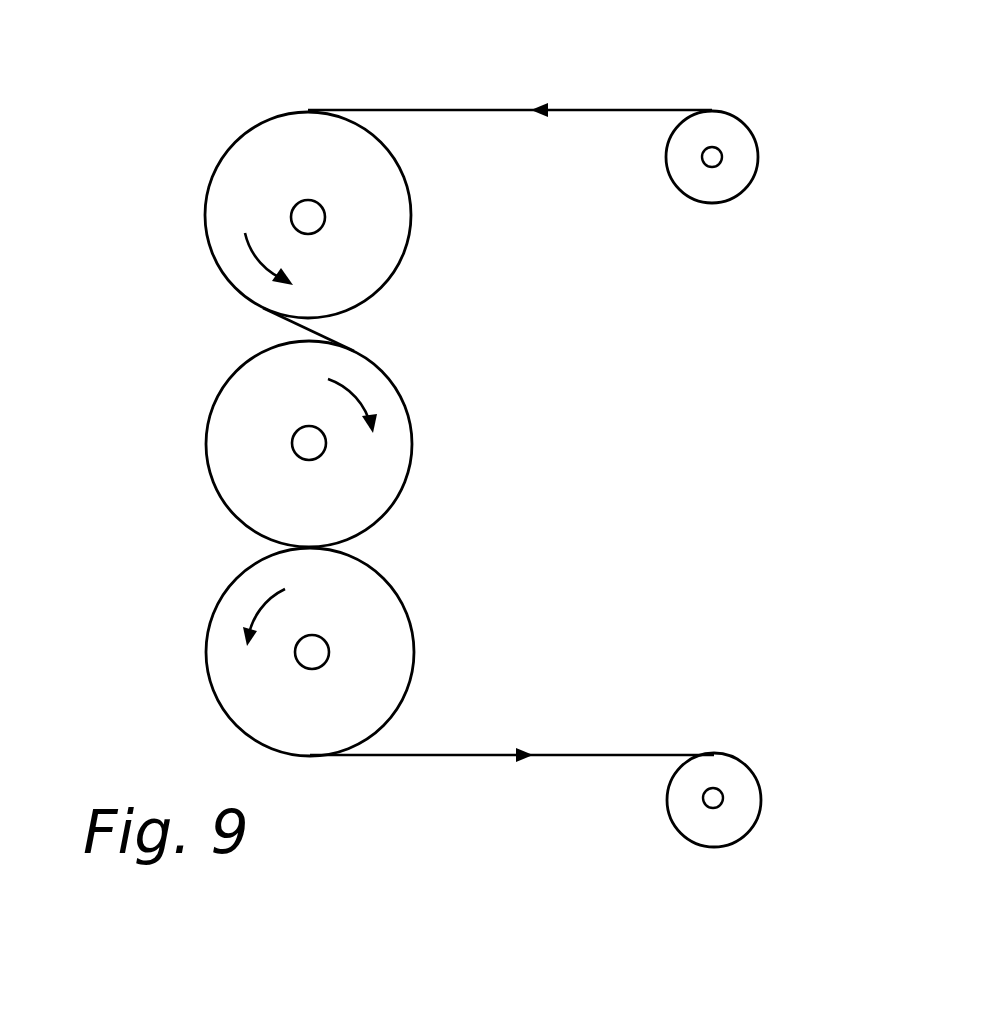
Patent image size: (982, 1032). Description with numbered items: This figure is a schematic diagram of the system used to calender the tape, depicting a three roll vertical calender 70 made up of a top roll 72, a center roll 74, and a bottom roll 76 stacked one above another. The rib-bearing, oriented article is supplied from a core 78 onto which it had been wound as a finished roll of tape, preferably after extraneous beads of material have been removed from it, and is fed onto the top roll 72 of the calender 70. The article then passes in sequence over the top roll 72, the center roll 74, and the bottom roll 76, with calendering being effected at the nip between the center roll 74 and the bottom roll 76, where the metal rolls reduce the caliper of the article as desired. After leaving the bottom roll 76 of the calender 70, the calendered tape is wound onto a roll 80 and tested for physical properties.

The three roll vertical calender 70 is at (163, 301).
The top roll 72 is at (411, 233).
The center roll 74 is at (389, 512).
The bottom roll 76 is at (403, 700).
The core 78 is at (725, 110).
The roll 80 is at (680, 833).